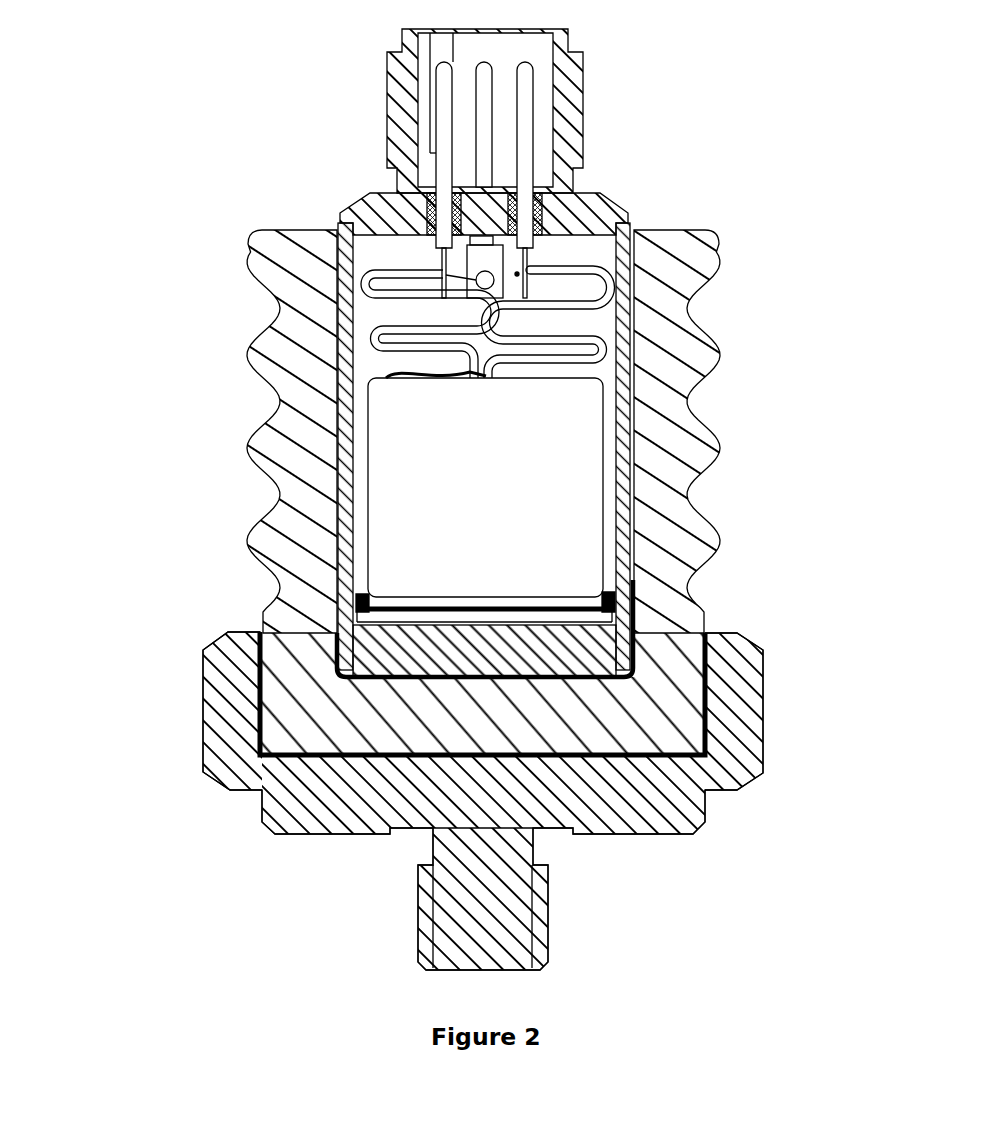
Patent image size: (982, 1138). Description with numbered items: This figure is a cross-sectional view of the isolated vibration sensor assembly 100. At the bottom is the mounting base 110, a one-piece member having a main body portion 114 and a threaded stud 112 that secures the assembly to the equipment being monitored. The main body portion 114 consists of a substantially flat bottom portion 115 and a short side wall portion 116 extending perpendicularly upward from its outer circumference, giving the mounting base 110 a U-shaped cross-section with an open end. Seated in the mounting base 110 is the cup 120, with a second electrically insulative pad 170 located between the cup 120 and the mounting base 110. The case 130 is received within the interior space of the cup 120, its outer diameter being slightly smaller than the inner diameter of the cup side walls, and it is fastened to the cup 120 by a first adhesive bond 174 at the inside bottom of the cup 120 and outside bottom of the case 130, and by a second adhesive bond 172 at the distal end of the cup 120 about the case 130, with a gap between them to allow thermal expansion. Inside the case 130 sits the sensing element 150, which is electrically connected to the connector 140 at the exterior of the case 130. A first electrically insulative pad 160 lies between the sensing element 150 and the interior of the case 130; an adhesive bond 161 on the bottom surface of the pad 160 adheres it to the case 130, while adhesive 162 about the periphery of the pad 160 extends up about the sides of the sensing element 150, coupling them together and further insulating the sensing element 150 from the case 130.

The vibration sensor assembly 100 is at (143, 143).
The mounting base 110 is at (777, 692).
The threaded stud 112 is at (548, 940).
The main body portion 114 is at (763, 765).
The bottom portion 115 is at (657, 836).
The side wall portion 116 is at (202, 710).
The cup 120 is at (233, 458).
The case 130 is at (633, 537).
The connector 140 is at (613, 75).
The sensing element 150 is at (593, 432).
The first electrically insulative pad 160 is at (547, 617).
The adhesive bond 161 is at (367, 655).
The adhesive 162 is at (465, 612).
The second electrically insulative pad 170 is at (262, 633).
The second adhesive bond 172 is at (337, 232).
The first adhesive bond 174 is at (637, 650).